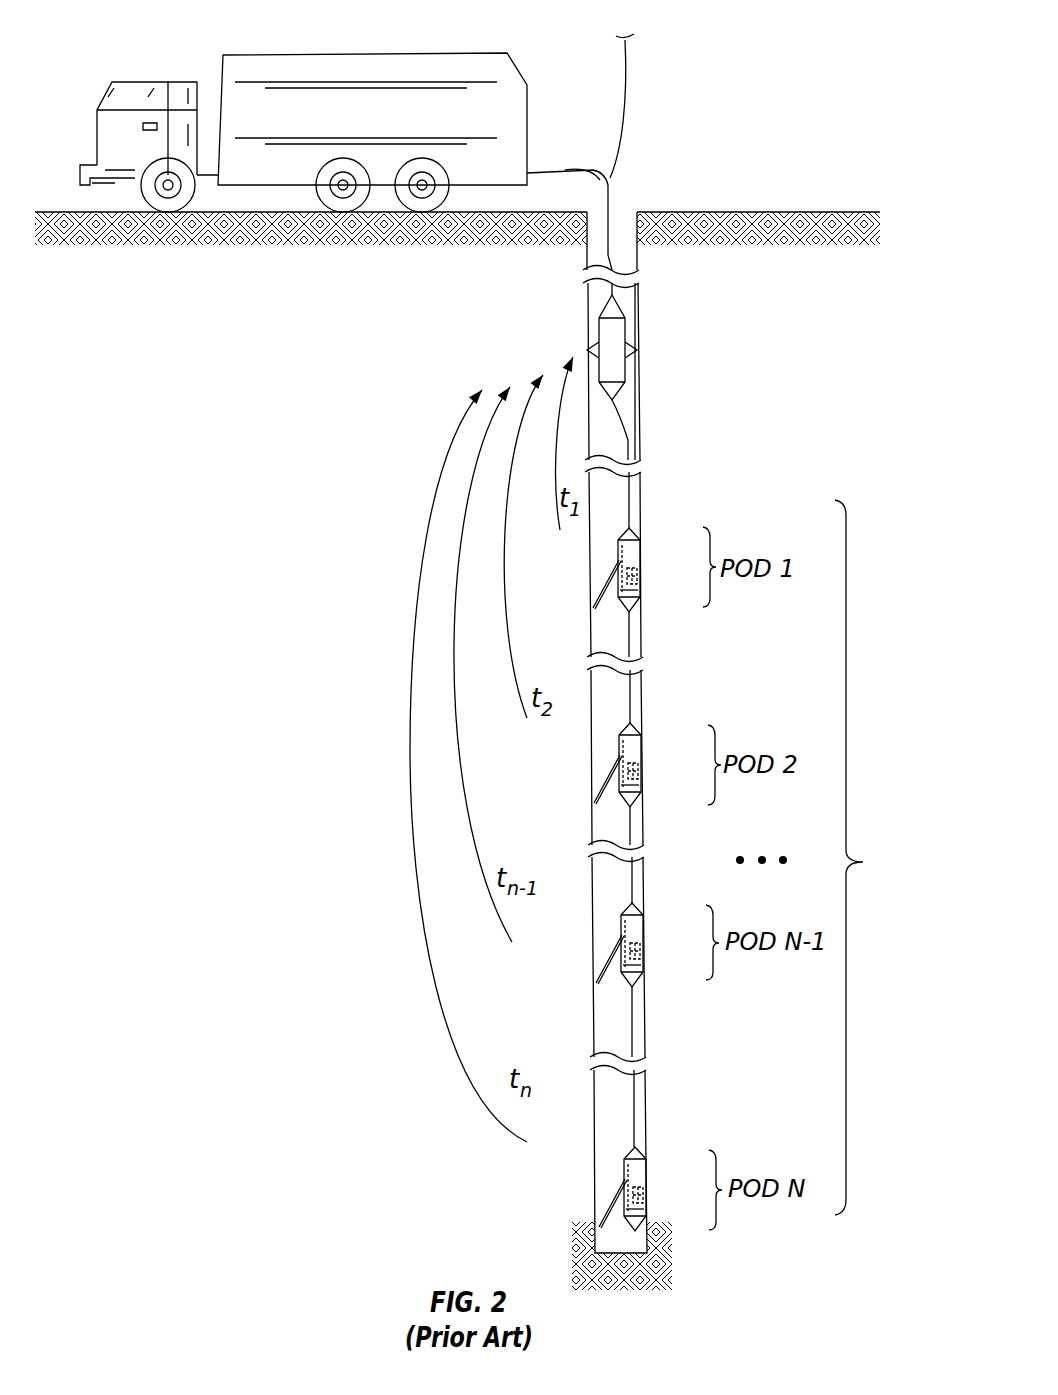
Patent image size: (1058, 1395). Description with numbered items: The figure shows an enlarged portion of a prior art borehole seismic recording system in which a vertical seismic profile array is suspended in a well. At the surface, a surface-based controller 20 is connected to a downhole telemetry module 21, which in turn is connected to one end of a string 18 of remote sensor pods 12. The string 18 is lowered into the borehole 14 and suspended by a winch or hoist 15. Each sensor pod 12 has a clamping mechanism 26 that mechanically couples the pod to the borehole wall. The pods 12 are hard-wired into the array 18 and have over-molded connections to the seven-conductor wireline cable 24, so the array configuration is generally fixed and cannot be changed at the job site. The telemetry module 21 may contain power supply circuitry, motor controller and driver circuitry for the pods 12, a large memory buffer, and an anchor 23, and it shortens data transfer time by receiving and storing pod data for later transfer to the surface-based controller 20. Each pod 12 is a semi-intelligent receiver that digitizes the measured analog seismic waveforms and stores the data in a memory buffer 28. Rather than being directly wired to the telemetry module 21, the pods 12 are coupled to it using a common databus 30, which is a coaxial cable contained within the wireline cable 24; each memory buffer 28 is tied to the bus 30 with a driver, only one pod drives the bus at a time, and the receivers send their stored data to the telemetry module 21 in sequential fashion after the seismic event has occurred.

The remote sensor pod 12 is at (638, 531).
The borehole 14 is at (652, 1238).
The winch or hoist 15 is at (626, 42).
The string of remote sensor pods 18 is at (872, 857).
The surface-based controller 20 is at (335, 50).
The downhole telemetry module 21 is at (625, 368).
The anchor 23 is at (628, 348).
The wireline cable 24 is at (549, 172).
The clamping mechanism 26 is at (604, 584).
The memory buffer 28 is at (636, 576).
The common databus 30 is at (566, 170).